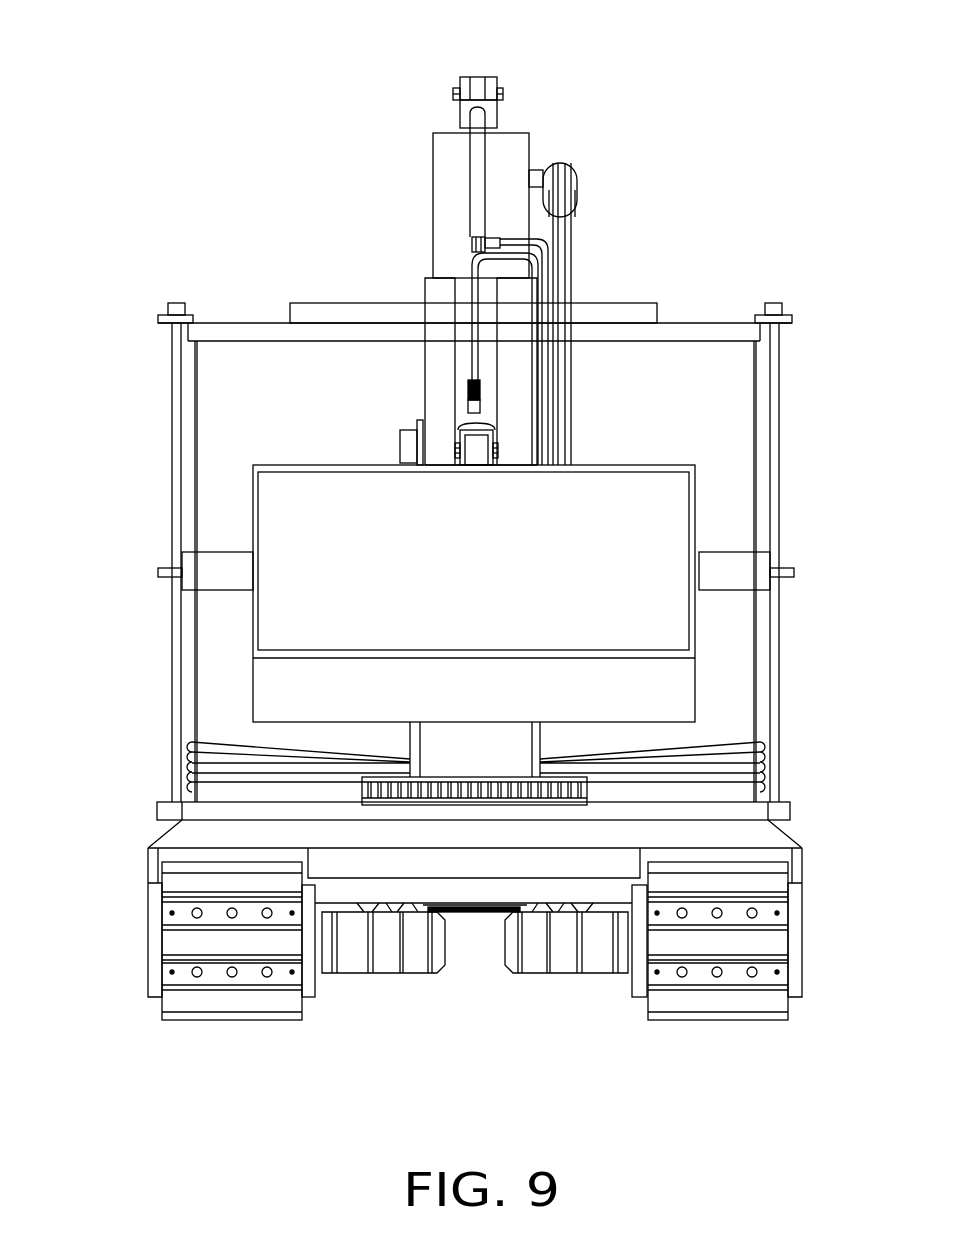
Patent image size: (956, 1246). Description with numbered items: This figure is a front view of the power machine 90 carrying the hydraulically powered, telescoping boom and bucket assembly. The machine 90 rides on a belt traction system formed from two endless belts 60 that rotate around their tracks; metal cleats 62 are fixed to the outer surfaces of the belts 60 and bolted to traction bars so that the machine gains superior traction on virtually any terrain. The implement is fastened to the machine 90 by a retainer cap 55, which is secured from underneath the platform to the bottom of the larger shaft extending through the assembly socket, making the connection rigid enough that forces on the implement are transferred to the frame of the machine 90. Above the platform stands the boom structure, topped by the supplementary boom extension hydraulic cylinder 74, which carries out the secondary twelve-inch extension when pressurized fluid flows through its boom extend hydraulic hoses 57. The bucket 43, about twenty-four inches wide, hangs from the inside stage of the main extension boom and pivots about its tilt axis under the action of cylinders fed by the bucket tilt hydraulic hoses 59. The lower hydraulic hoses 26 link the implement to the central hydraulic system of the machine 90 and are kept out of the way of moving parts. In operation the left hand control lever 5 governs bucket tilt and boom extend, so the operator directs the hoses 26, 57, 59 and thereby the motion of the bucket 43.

The left hand control lever 5 is at (592, 297).
The hydraulic hoses 26 is at (185, 752).
The bucket 43 is at (303, 512).
The retainer cap 55 is at (473, 913).
The boom extend hydraulic hoses 57 is at (467, 257).
The bucket tilt hydraulic hoses 59 is at (550, 163).
The endless belts 60 is at (170, 938).
The metal cleats 62 is at (700, 972).
The supplementary boom extension hydraulic cylinder 74 is at (478, 113).
The machine 90 is at (243, 298).